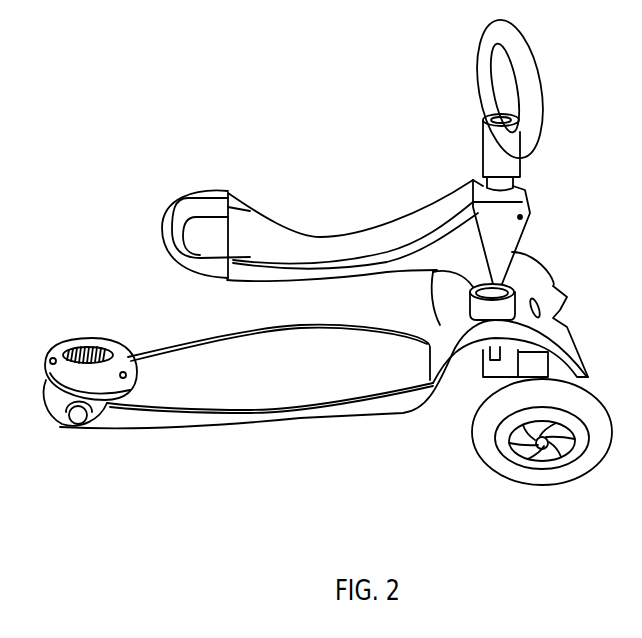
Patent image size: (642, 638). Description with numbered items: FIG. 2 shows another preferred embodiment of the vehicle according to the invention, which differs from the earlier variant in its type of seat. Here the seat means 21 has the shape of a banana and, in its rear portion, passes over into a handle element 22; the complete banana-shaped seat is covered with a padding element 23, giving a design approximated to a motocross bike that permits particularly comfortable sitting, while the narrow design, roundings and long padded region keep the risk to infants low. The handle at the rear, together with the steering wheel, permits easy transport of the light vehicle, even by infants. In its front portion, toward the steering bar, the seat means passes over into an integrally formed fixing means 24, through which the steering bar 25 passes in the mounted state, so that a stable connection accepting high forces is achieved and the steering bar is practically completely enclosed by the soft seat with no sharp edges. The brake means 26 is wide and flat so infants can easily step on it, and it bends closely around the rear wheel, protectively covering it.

The seat means 21 is at (412, 266).
The handle element 22 is at (177, 192).
The padding element 23 is at (311, 240).
The fixing means 24 is at (513, 229).
The steering bar 25 is at (513, 186).
The brake means 26 is at (77, 338).